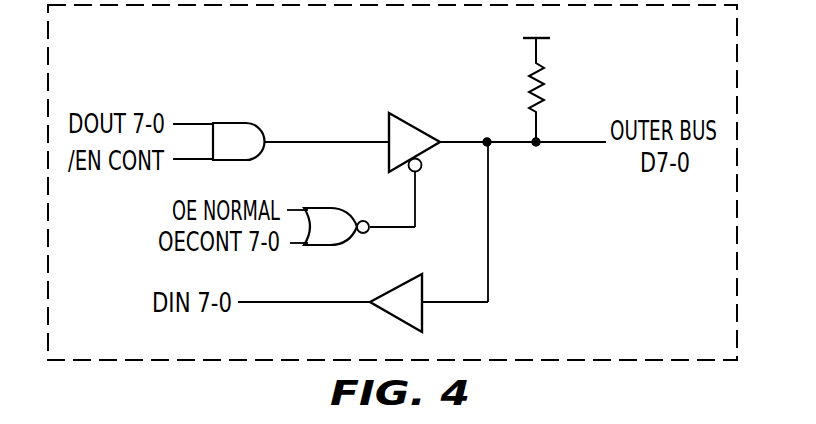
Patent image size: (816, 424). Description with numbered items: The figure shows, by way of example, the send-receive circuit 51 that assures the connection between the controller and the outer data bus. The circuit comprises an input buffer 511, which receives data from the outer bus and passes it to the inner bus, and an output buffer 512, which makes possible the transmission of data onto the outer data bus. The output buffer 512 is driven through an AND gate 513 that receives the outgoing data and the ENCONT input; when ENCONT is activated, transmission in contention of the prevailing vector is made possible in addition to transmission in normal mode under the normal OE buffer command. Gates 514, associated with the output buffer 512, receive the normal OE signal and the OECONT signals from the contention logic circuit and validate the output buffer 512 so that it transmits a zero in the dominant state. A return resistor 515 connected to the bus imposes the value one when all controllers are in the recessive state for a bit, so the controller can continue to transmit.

The send-receive circuit 51 is at (319, 46).
The input buffer 511 is at (420, 318).
The output buffer 512 is at (413, 128).
The AND gate 513 is at (233, 124).
The gates 514 is at (343, 240).
The return resistor 515 is at (543, 80).